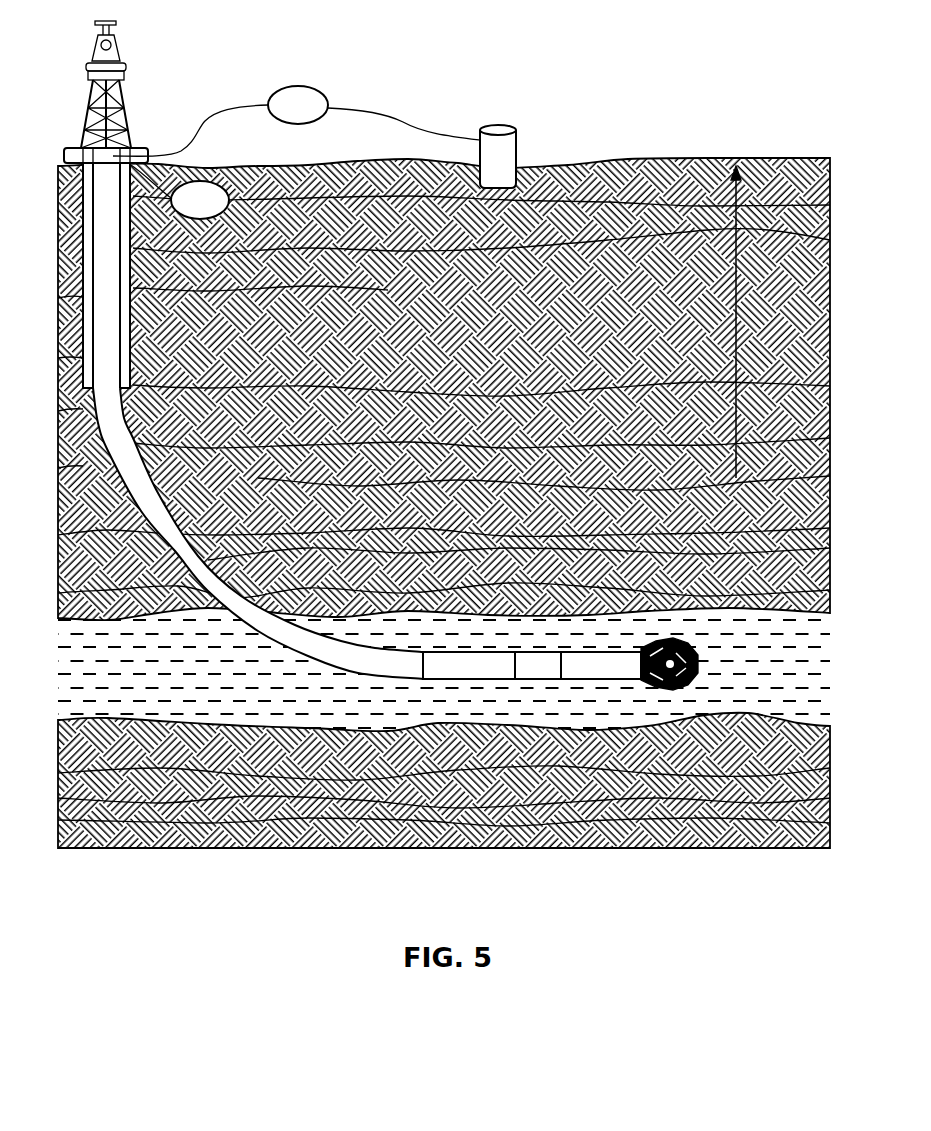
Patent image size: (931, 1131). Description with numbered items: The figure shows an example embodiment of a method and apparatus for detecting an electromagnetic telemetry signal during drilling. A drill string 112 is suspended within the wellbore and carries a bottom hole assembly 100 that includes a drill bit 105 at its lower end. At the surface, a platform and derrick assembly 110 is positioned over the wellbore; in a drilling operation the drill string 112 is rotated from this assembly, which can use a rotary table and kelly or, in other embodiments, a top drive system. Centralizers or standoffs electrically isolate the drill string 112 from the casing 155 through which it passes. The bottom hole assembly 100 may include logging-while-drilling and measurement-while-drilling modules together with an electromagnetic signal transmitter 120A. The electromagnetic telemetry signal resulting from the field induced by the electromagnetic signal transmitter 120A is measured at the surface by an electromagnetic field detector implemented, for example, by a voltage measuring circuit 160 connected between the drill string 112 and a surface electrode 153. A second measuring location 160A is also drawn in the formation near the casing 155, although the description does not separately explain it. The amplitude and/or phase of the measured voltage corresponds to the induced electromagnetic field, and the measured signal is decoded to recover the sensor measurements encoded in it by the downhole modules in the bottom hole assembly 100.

The platform and derrick assembly 110 is at (129, 83).
The voltage measuring circuit 160 is at (318, 87).
The surface electrode 153 is at (512, 137).
The valve V2 160A is at (219, 200).
The casing 155 is at (140, 148).
The drill string 112 is at (206, 554).
The bottom hole assembly 100 is at (438, 675).
The electromagnetic signal transmitter 120A is at (520, 672).
The drill bit 105 is at (650, 678).